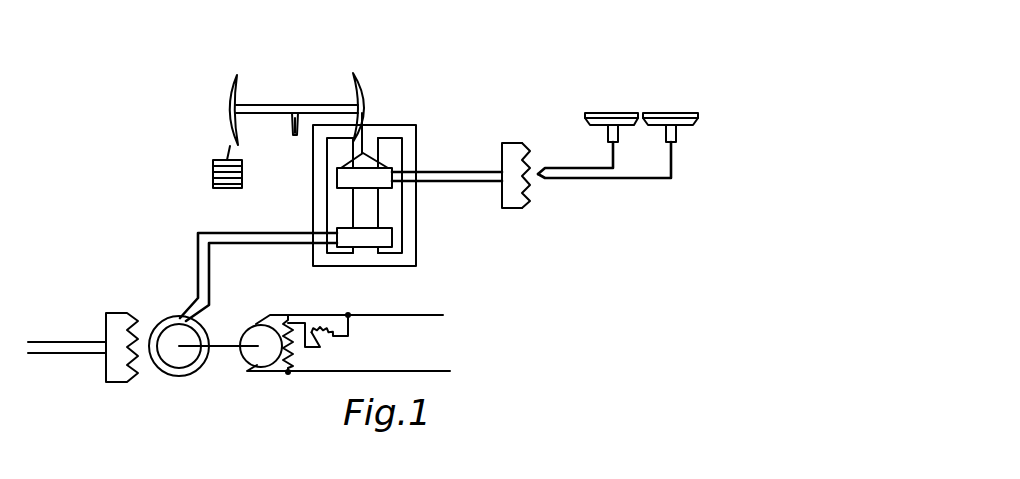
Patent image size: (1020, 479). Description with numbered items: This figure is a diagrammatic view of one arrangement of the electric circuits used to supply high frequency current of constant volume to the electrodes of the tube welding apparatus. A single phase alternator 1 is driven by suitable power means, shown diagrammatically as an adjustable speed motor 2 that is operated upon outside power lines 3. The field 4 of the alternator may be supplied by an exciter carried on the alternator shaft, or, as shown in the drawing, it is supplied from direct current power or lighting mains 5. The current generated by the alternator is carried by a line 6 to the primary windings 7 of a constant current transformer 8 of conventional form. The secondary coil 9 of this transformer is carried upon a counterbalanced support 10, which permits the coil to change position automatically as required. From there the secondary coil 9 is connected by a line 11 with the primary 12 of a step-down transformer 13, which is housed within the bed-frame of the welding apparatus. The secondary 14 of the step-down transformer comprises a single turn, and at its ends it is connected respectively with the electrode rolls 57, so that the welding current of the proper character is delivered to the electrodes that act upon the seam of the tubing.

The single phase alternator 1 is at (147, 373).
The adjustable speed motor 2 is at (262, 377).
The outside power lines 3 is at (425, 371).
The field 4 is at (133, 335).
The direct current power or lighting mains 5 is at (37, 351).
The line 6 is at (238, 238).
The primary windings 7 is at (367, 232).
The constant current transformer 8 is at (368, 260).
The secondary coil 9 is at (367, 175).
The counterbalanced support 10 is at (272, 103).
The line 11 is at (450, 173).
The primary 12 is at (525, 186).
The step-down transformer 13 is at (537, 203).
The secondary 14 is at (568, 182).
The electrode rolls 57 is at (622, 110).